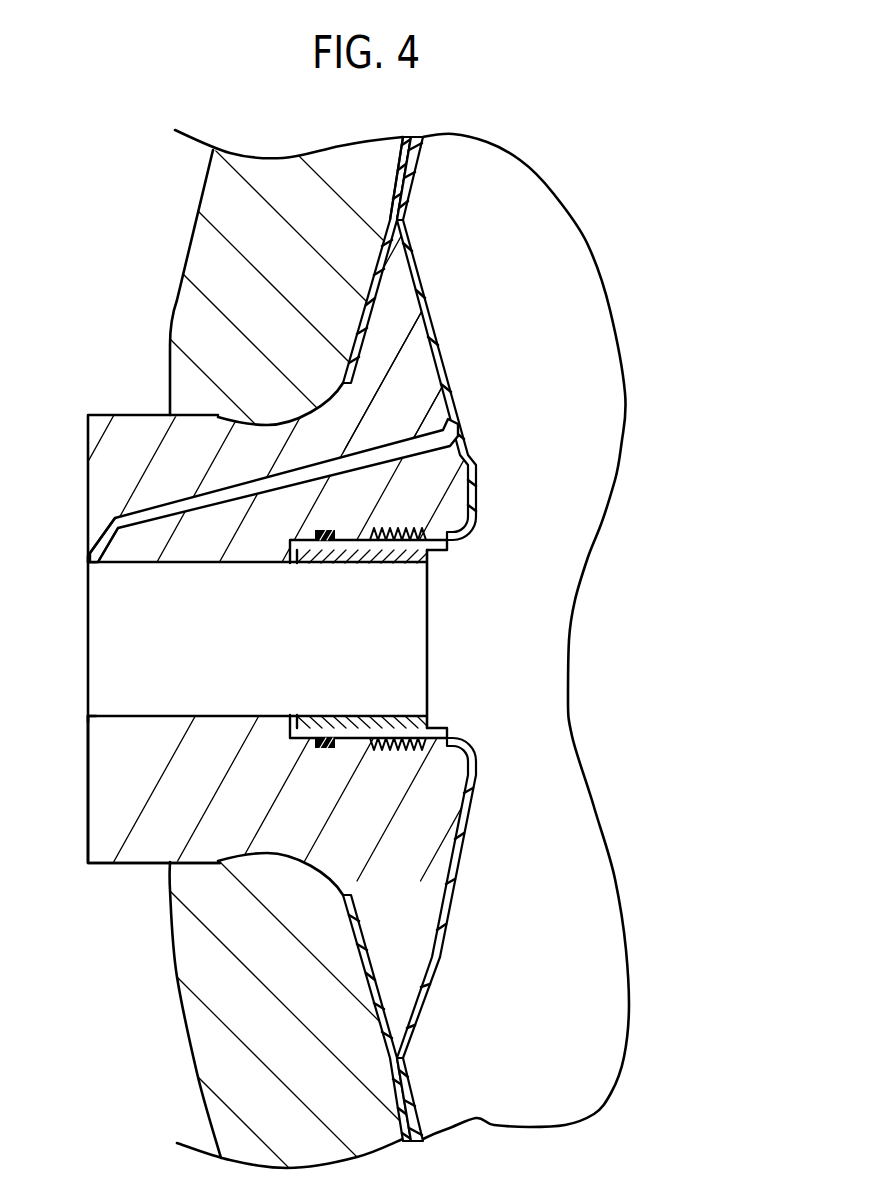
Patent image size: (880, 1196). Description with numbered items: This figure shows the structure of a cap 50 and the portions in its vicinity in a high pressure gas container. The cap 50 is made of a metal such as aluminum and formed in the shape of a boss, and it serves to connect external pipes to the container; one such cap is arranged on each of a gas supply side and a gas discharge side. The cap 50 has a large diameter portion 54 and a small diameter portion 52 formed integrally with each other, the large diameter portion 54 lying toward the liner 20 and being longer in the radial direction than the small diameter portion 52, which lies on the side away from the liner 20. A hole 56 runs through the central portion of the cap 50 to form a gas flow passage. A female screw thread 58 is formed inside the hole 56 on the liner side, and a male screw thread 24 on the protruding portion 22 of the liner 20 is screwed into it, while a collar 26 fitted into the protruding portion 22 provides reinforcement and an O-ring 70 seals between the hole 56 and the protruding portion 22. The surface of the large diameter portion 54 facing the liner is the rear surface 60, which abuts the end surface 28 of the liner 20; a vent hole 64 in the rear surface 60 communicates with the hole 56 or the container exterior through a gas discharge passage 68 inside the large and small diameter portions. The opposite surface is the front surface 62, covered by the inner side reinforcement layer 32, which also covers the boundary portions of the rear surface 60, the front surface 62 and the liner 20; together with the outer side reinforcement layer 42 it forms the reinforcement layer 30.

The liner 20 is at (413, 178).
The protruding portion 22 is at (347, 538).
The male screw thread 24 is at (404, 530).
The collar 26 is at (288, 628).
The end surface 28 is at (428, 352).
The reinforcement layer 30 is at (204, 190).
The inner side reinforcement layer 32 is at (400, 146).
The outer side reinforcement layer 42 is at (278, 156).
The cap 50 is at (121, 414).
The small diameter portion 52 is at (134, 870).
The large diameter portion 54 is at (380, 905).
The hole 56 is at (88, 582).
The female screw thread 58 is at (407, 558).
The rear surface 60 is at (421, 311).
The front surface 62 is at (377, 263).
The vent hole 64 is at (462, 442).
The gas discharge passage 68 is at (105, 535).
The O-ring 70 is at (319, 548).